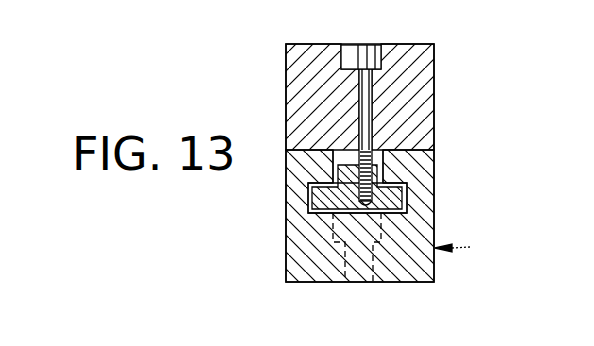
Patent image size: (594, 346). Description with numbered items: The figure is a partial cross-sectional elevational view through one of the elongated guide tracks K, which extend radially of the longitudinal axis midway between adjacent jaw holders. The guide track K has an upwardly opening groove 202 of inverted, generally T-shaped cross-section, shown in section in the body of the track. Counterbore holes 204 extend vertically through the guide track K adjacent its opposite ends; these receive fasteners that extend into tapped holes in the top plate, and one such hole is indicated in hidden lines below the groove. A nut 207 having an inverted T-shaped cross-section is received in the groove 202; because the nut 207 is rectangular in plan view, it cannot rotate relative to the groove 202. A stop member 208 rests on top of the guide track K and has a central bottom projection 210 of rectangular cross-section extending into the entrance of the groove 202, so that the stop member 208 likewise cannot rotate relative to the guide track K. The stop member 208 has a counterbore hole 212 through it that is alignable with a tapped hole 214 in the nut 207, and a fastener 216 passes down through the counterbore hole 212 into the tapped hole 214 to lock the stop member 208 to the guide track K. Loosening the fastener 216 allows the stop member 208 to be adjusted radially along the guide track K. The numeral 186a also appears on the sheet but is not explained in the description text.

The surface 186a is at (81, 337).
The groove 202 is at (319, 214).
The counterbore holes 204 is at (373, 262).
The nut 207 is at (400, 190).
The stop member 208 is at (434, 105).
The central bottom projection 210 is at (384, 155).
The counterbore hole 212 is at (360, 66).
The tapped hole 214 is at (349, 193).
The fastener 216 is at (358, 90).
The guide track K is at (463, 246).